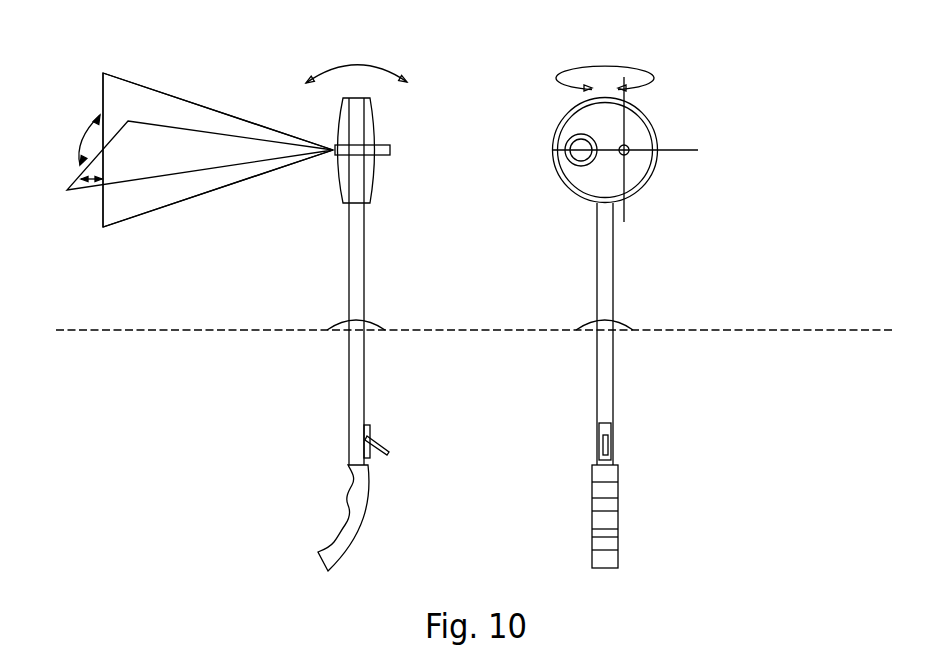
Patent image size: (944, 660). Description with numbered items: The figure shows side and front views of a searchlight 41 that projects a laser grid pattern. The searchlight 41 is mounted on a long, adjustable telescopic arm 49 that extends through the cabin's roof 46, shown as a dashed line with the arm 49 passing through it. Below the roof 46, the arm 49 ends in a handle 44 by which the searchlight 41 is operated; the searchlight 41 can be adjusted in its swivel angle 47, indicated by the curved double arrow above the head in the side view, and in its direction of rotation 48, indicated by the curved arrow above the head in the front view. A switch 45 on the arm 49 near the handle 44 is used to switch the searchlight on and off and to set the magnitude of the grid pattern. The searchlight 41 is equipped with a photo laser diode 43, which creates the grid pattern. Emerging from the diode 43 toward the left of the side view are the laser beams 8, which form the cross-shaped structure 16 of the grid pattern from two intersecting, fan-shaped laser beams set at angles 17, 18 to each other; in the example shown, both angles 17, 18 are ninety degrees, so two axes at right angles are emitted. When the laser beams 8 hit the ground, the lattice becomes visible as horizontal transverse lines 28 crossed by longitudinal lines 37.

The laser beams 8 is at (187, 128).
The cross-shaped structure 16 is at (98, 103).
The angle 17 is at (74, 191).
The angle 18 is at (85, 138).
The transverse lines 28 is at (80, 179).
The longitudinal lines 37 is at (102, 200).
The searchlight 41 is at (418, 137).
The photo laser diode 43 is at (332, 153).
The handle 44 is at (360, 512).
The switch 45 is at (372, 440).
The cabin roof 46 is at (713, 330).
The swivel angle 47 is at (353, 65).
The direction of rotation 48 is at (637, 68).
The telescopic arm 49 is at (355, 262).